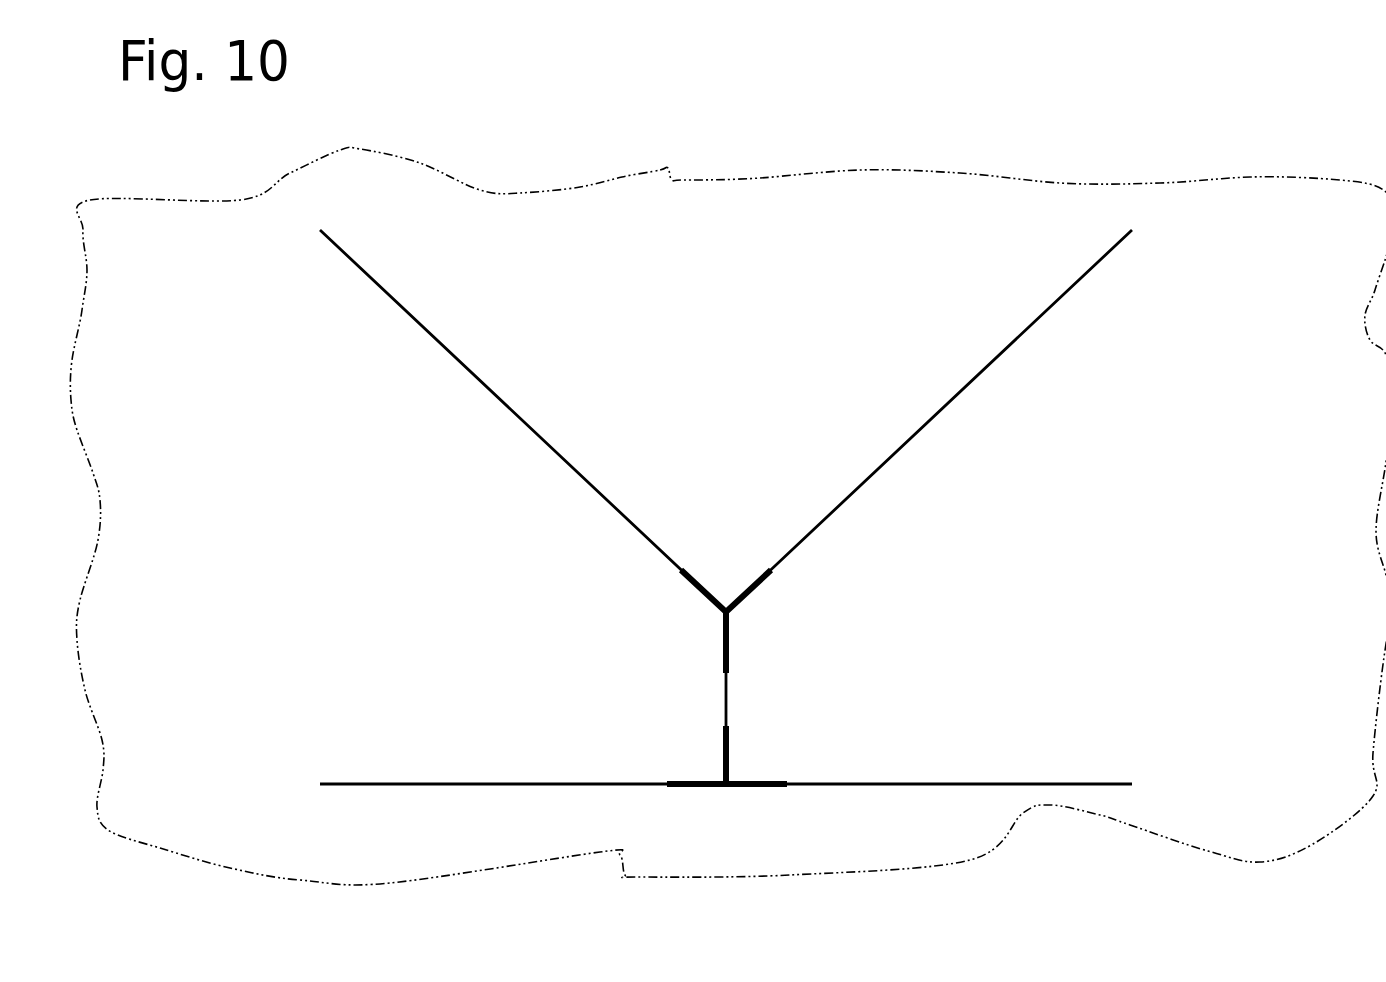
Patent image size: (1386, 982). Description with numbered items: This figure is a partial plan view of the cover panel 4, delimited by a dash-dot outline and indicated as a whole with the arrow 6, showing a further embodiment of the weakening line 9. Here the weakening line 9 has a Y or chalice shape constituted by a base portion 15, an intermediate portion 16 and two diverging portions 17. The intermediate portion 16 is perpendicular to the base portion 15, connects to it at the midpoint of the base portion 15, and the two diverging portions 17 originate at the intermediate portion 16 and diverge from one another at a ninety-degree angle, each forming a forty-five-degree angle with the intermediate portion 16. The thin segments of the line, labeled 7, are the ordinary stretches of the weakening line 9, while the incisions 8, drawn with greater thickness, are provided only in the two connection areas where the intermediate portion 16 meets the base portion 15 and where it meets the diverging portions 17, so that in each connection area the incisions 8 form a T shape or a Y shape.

The panel 4 is at (822, 214).
The reinforcement arrangement 6 is at (1235, 127).
The strut 7 is at (490, 392).
The incisions 8 is at (700, 578).
The weakening line 9 is at (630, 268).
The base portion 15 is at (873, 755).
The intermediate portion 16 is at (628, 693).
The diverging portions 17 is at (385, 363).